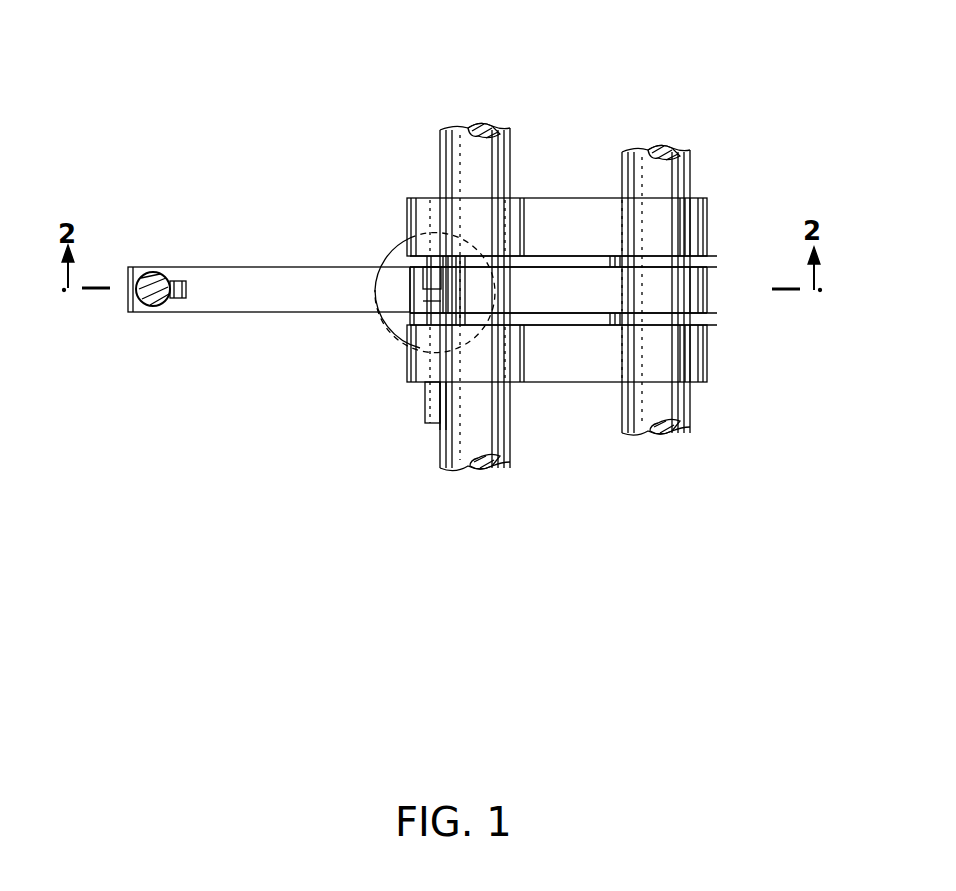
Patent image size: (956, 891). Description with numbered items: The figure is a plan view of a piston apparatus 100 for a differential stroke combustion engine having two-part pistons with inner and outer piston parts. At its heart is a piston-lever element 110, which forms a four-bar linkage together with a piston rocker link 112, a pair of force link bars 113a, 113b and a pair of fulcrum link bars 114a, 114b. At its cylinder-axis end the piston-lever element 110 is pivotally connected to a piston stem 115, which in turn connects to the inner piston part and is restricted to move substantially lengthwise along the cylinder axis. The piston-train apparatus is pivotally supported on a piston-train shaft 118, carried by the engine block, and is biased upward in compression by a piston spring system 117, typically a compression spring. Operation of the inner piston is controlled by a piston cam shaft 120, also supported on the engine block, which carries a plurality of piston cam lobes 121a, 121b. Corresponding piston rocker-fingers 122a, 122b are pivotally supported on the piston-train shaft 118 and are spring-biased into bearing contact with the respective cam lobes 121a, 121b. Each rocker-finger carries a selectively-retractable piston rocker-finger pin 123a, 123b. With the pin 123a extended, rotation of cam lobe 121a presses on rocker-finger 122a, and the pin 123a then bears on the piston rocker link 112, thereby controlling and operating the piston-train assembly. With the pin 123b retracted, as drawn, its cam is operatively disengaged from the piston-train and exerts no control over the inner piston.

The piston apparatus 100 is at (238, 36).
The piston-lever element 110 is at (286, 268).
The piston rocker link 112 is at (588, 301).
The force link bar 113a is at (422, 243).
The force link bar 113b is at (392, 336).
The fulcrum link bar 114a is at (705, 256).
The fulcrum link bar 114b is at (705, 319).
The piston stem 115 is at (160, 270).
The piston spring system 117 is at (384, 322).
The piston-train shaft 118 is at (664, 152).
The piston cam shaft 120 is at (468, 160).
The piston cam lobe 121a is at (430, 196).
The piston cam lobe 121b is at (432, 380).
The piston rocker-finger 122a is at (601, 237).
The piston rocker-finger 122b is at (601, 363).
The piston rocker-finger pin 123a is at (426, 224).
The piston rocker-finger pin 123b is at (432, 424).